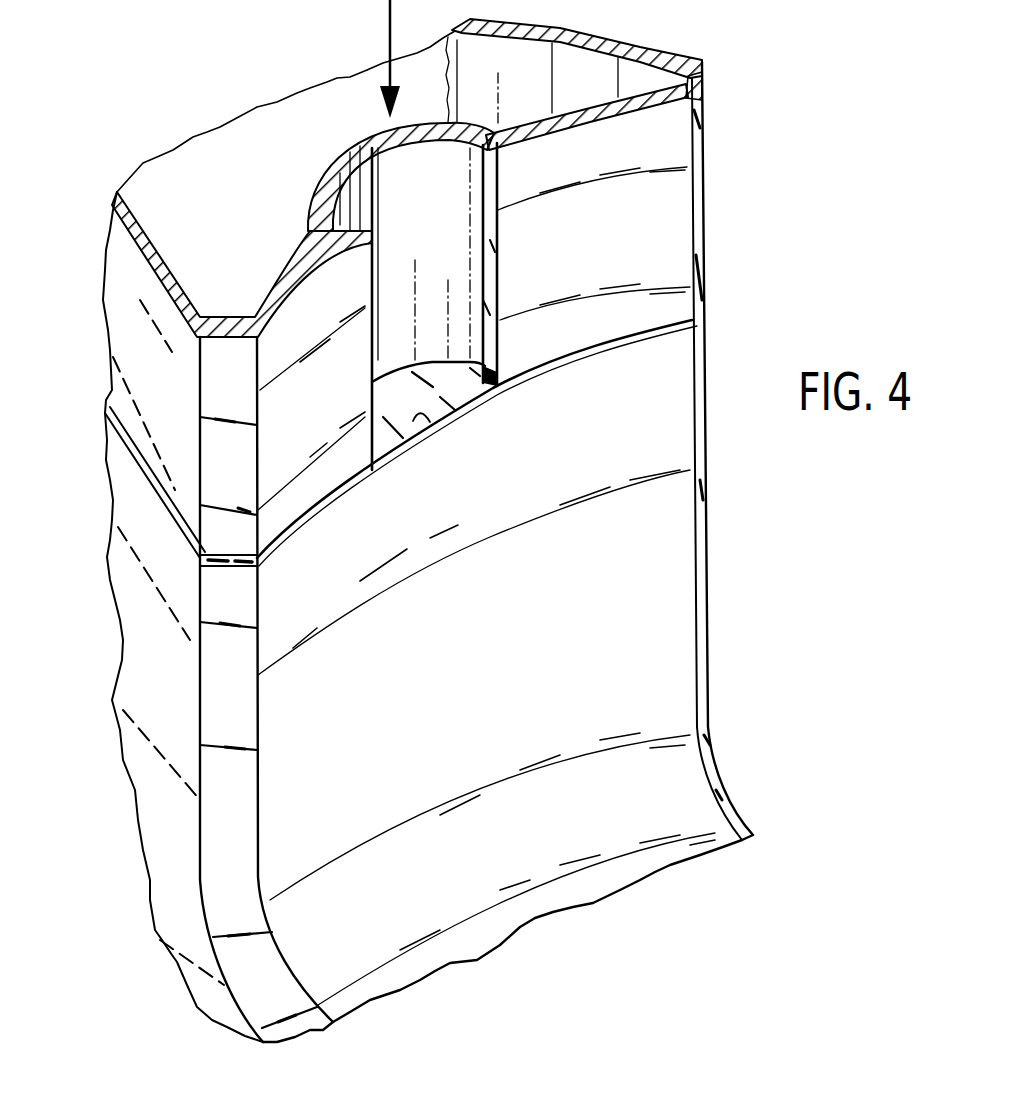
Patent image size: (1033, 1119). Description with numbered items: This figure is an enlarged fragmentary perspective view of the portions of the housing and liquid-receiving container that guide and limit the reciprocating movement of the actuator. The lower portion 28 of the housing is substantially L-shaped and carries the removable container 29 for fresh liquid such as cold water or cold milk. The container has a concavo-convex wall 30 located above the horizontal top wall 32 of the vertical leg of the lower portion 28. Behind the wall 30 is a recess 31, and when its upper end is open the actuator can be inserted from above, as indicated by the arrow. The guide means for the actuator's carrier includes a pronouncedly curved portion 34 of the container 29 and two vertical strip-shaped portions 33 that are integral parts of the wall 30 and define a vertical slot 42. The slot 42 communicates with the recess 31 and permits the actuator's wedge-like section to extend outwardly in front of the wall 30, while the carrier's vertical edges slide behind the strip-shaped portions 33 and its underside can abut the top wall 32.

The lower portion 28 is at (153, 648).
The removable container 29 is at (590, 77).
The concavo-convex wall 30 is at (623, 210).
The recess 31 is at (402, 298).
The top wall 32 is at (430, 422).
The strip-shaped portions 33 is at (320, 231).
The curved portion 34 is at (357, 148).
The vertical slot 42 is at (493, 355).